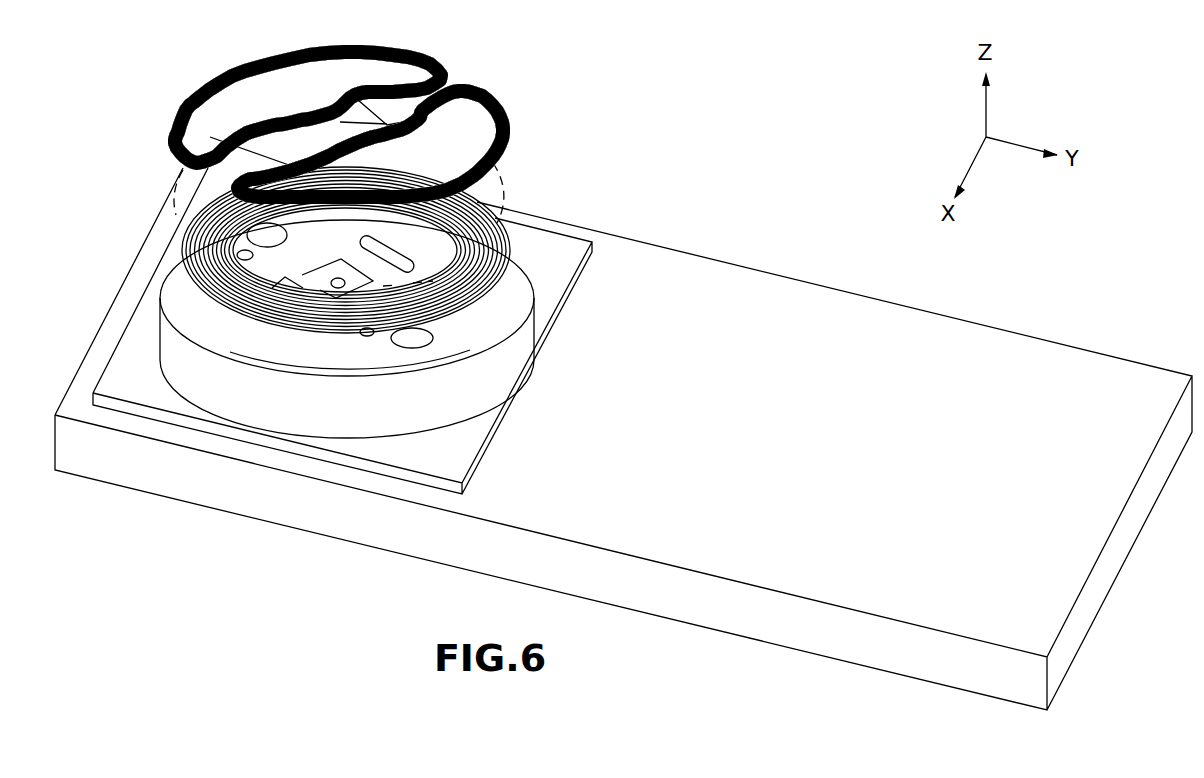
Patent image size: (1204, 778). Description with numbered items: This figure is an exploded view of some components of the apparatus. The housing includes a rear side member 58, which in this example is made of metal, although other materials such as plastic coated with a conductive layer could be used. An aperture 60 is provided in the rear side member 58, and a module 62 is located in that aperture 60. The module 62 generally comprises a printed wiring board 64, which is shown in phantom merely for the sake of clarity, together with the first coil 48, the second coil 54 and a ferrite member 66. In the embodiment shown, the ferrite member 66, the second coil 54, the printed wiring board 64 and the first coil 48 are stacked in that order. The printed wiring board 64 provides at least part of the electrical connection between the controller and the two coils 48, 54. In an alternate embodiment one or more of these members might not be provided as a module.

The first coil 48 is at (263, 57).
The second coil 54 is at (453, 320).
The rear side member 58 is at (792, 277).
The aperture 60 is at (178, 357).
The module 62 is at (508, 43).
The printed wiring board 64 is at (512, 182).
The ferrite member 66 is at (263, 364).